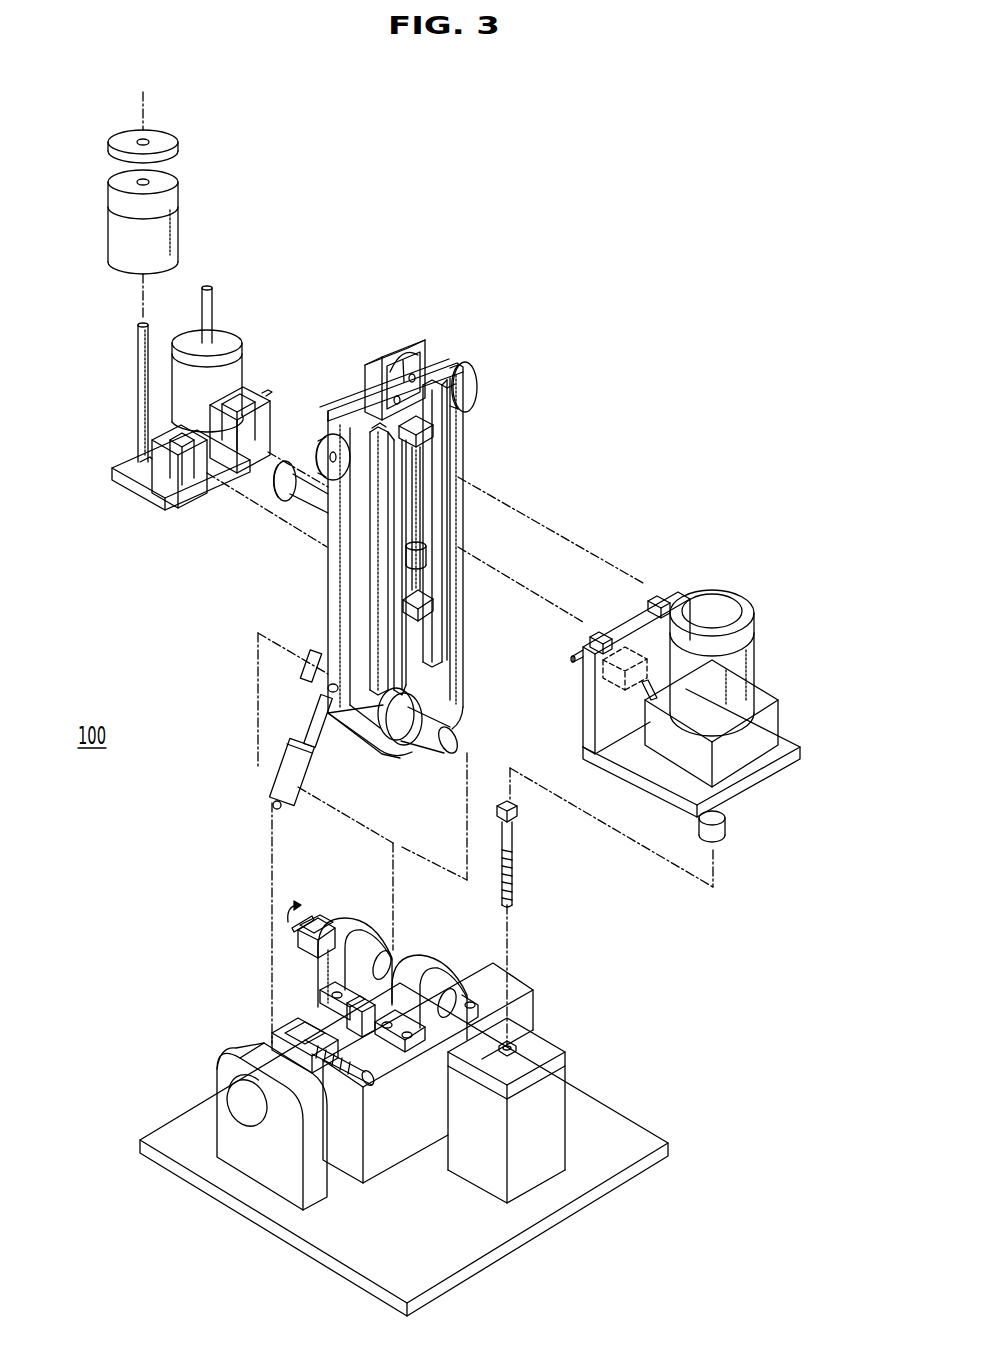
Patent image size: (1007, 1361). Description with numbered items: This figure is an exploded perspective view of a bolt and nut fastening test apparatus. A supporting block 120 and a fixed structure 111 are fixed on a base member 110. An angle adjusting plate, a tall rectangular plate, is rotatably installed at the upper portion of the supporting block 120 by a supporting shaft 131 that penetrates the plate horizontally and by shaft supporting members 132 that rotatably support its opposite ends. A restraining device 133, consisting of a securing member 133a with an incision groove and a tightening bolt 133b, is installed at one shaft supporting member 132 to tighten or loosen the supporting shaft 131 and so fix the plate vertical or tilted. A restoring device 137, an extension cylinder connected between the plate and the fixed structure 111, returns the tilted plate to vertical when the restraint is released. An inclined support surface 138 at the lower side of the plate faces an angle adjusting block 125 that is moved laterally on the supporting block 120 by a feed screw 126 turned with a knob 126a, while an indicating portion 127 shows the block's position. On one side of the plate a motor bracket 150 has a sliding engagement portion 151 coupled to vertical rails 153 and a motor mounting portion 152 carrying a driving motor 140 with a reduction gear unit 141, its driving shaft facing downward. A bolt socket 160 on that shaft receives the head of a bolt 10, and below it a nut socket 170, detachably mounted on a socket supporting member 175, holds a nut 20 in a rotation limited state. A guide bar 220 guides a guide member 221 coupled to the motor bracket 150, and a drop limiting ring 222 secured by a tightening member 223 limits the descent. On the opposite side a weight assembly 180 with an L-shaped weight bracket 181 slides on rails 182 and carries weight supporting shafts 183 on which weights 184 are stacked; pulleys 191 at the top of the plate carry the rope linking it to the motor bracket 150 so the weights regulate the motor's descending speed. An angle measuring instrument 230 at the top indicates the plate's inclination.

The bolt 10 is at (518, 860).
The nut 20 is at (514, 1045).
The base member 110 is at (358, 1247).
The fixed structure 111 is at (250, 1173).
The supporting block 120 is at (375, 1155).
The angle adjusting block 125 is at (355, 1058).
The feed screw 126 is at (317, 1043).
The knob 126a is at (232, 1098).
The indicating portion 127 is at (358, 1030).
The supporting shaft 131 is at (428, 746).
The shaft supporting members 132 is at (378, 937).
The restraining device 133 is at (287, 939).
The securing member 133a is at (318, 914).
The tightening bolt 133b is at (306, 920).
The restoring device 137 is at (262, 782).
The inclined support surface 138 is at (350, 745).
The driving motor 140 is at (764, 637).
The reduction gear unit 141 is at (774, 722).
The motor bracket 150 is at (702, 576).
The sliding engagement portion 151 is at (604, 714).
The motor mounting portion 152 is at (773, 771).
The rails 153 is at (458, 448).
The bolt socket 160 is at (728, 831).
The nut socket 170 is at (545, 1050).
The socket supporting member 175 is at (558, 1150).
The weight assembly 180 is at (104, 490).
The weight bracket 181 is at (141, 498).
The rails 182 is at (393, 412).
The weight supporting shafts 183 is at (136, 349).
The weights 184 is at (112, 231).
The pulleys 191 is at (322, 445).
The guide bar 220 is at (418, 500).
The guide member 221 is at (600, 681).
The drop limiting ring 222 is at (428, 575).
The tightening member 223 is at (299, 500).
The angle measuring instrument 230 is at (398, 352).